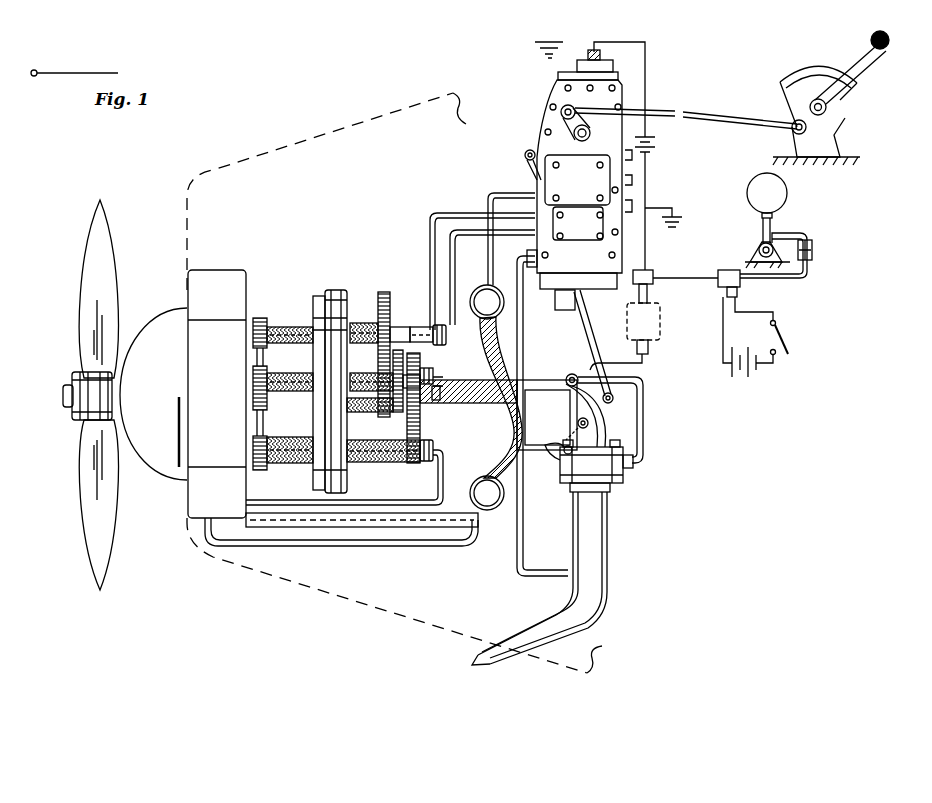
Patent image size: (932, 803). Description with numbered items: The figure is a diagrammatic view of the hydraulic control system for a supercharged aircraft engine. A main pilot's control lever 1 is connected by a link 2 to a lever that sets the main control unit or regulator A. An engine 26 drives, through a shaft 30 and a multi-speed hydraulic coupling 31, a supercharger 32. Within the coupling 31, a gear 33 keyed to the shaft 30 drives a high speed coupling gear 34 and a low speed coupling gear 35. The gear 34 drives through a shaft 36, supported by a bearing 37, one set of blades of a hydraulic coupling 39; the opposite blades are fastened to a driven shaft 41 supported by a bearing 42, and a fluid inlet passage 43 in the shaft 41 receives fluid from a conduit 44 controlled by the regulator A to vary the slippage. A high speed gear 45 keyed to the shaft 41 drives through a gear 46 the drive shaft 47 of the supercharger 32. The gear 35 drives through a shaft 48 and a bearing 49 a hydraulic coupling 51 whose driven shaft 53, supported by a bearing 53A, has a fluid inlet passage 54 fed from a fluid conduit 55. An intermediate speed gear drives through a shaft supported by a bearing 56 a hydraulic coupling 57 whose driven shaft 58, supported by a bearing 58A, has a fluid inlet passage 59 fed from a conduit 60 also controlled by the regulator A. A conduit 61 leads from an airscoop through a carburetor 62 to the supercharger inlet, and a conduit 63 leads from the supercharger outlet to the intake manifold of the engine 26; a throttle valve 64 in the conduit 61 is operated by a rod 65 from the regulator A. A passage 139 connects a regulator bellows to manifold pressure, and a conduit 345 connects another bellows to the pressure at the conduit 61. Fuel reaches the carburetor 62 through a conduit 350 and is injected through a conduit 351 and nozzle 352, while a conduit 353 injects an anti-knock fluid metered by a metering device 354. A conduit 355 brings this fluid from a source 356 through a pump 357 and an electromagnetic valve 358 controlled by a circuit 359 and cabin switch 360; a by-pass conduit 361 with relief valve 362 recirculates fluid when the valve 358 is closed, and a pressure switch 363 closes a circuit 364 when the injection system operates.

The main pilot's control lever 1 is at (868, 70).
The link 2 is at (722, 118).
The main control unit or regulator A is at (545, 115).
The engine 26 is at (226, 361).
The shaft 30 is at (252, 395).
The multi-speed hydraulic coupling 31 is at (360, 470).
The supercharger 32 is at (480, 445).
The gear 33 is at (252, 385).
The high speed coupling gear 34 is at (260, 318).
The low speed coupling gear 35 is at (254, 470).
The shaft 36 is at (290, 330).
The bearing 37 is at (290, 366).
The hydraulic coupling 39 is at (334, 290).
The driven shaft 41 is at (397, 328).
The bearing 42 is at (365, 325).
The fluid inlet passage 43 is at (416, 330).
The fluid conduit 44 is at (447, 338).
The high speed gear 45 is at (383, 296).
The gear 46 is at (384, 415).
The drive shaft 47 is at (432, 402).
The shaft 48 is at (272, 465).
The bearing 49 is at (295, 437).
The hydraulic coupling 51 is at (313, 490).
The driven shaft 53 is at (395, 460).
The bearing 53A is at (380, 465).
The fluid inlet passage 54 is at (364, 426).
The fluid conduit 55 is at (446, 503).
The bearing 56 is at (280, 406).
The hydraulic coupling 57 is at (338, 391).
The driven shaft 58 is at (371, 371).
The bearing 58A is at (370, 408).
The fluid inlet passage 59 is at (424, 373).
The fluid conduit 60 is at (430, 234).
The conduit 61 is at (605, 603).
The carburetor 62 is at (626, 482).
The conduit 63 is at (372, 542).
The throttle valve 64 is at (578, 426).
The rod 65 is at (585, 325).
The passage 139 is at (490, 195).
The conduit 345 is at (522, 344).
The conduit 350 is at (572, 468).
The conduit 351 is at (644, 422).
The nozzle 352 is at (571, 377).
The conduit 353 is at (650, 364).
The metering device 354 is at (660, 322).
The conduit 355 is at (676, 276).
The source of supplemental fluid 356 is at (780, 192).
The pump 357 is at (757, 252).
The valve 358 is at (742, 286).
The electrical control circuit 359 is at (776, 312).
The switch 360 is at (789, 349).
The by-pass conduit 361 is at (810, 279).
The relief valve 362 is at (815, 254).
The pressure switch 363 is at (652, 284).
The circuit 364 is at (648, 190).